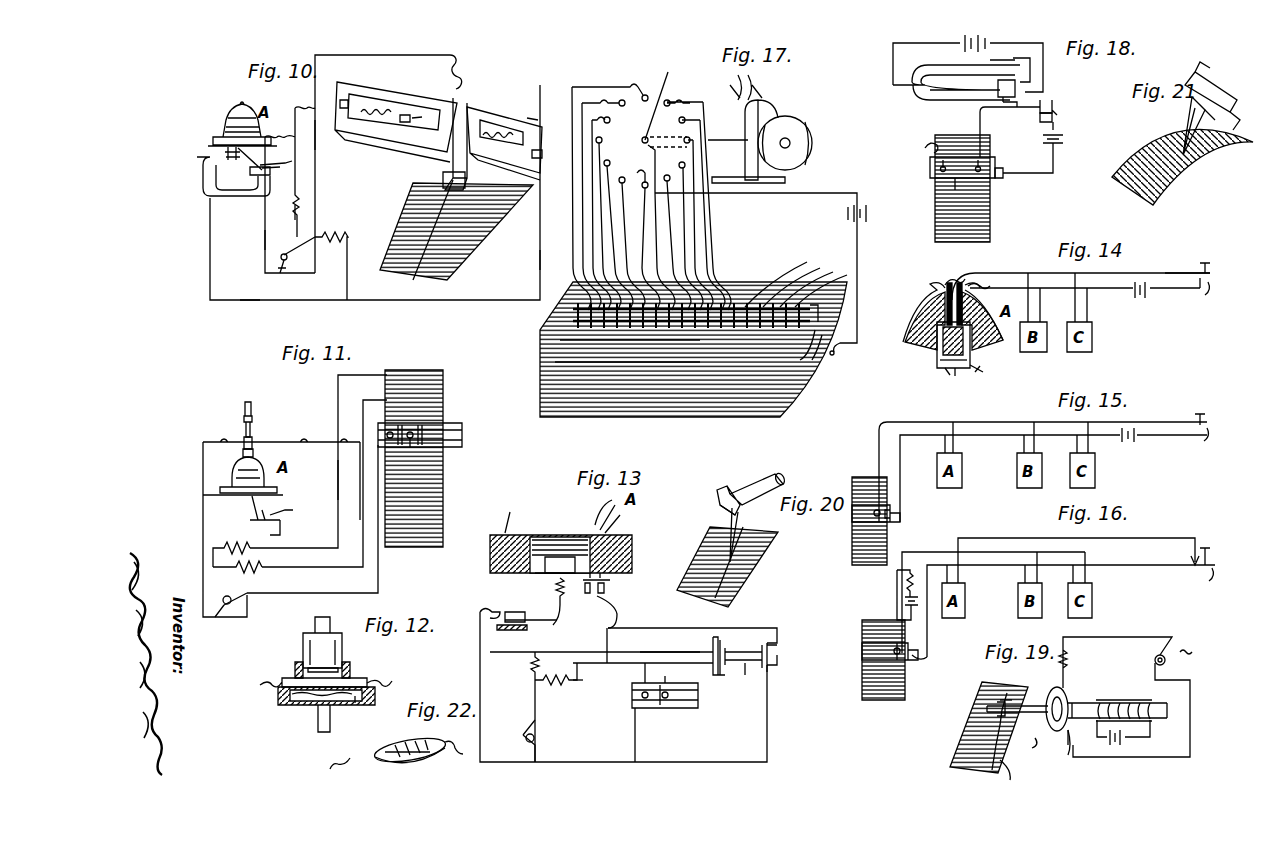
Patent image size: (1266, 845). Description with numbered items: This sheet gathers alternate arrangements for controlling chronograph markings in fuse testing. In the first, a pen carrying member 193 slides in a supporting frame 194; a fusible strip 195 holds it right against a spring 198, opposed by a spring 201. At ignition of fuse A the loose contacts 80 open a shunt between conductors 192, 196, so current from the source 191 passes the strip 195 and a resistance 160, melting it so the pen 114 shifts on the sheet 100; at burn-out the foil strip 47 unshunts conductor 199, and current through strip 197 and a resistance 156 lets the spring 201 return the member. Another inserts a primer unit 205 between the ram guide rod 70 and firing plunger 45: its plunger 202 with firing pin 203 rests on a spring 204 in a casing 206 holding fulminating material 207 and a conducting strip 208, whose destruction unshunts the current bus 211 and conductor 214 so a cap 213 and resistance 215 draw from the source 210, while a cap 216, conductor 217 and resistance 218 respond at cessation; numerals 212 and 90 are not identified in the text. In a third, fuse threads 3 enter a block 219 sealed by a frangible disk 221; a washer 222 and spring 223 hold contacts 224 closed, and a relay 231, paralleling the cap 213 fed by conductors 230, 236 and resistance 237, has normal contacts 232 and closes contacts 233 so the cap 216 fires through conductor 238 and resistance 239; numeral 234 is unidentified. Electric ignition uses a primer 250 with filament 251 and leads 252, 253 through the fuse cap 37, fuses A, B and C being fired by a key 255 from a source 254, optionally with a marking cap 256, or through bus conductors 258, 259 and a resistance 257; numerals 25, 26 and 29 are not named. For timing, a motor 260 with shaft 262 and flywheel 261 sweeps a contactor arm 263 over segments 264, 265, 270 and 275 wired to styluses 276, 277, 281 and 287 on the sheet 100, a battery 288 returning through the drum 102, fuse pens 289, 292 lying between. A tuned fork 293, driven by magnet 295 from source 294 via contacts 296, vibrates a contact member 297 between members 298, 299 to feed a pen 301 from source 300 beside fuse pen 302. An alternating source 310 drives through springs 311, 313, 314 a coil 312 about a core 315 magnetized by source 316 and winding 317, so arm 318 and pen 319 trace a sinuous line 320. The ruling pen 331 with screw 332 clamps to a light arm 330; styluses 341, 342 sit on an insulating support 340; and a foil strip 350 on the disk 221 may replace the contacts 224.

In FIG. 13, the threads 3 is at (560, 535).
In FIG. 14, the screw 25 is at (945, 362).
In FIG. 14, the stylus tip 26 is at (952, 370).
In FIG. 14, the arm 29 is at (975, 372).
In FIG. 14, the fuse cap 37 is at (933, 300).
In FIG. 11, the firing plunger 45 is at (255, 452).
In FIG. 12, the firing plunger 45 is at (318, 722).
In FIG. 10, the foil strip 47 is at (262, 162).
In FIG. 11, the foil strip 47 is at (257, 511).
In FIG. 11, the ram guide rod 70 is at (253, 405).
In FIG. 10, the loose contacts 80 is at (222, 152).
In FIG. 13, the loose contacts 80 is at (612, 584).
In FIG. 10, the contact spring 90 is at (290, 183).
In FIG. 11, the contact spring 90 is at (283, 527).
In FIG. 10, the sheet 100 is at (455, 238).
In FIG. 11, the sheet 100 is at (428, 496).
In FIG. 20, the sheet 100 is at (753, 560).
In FIG. 17, the sheet 100 is at (780, 393).
In FIG. 18, the sheet 100 is at (990, 209).
In FIG. 21, the sheet 100 is at (1185, 170).
In FIG. 15, the sheet 100 is at (852, 540).
In FIG. 16, the sheet 100 is at (862, 678).
In FIG. 19, the sheet 100 is at (952, 740).
In FIG. 17, the drum 102 is at (817, 327).
In FIG. 18, the drum 102 is at (1000, 186).
In FIG. 10, the pen 114 is at (443, 182).
In FIG. 10, the resistance 156 is at (295, 212).
In FIG. 10, the resistance 160 is at (335, 238).
In FIG. 10, the source 191 is at (281, 258).
In FIG. 10, the conductor 192 is at (315, 128).
In FIG. 10, the pen carrying member 193 is at (462, 98).
In FIG. 10, the supporting frame 194 is at (512, 108).
In FIG. 10, the fusible strip 195 is at (540, 150).
In FIG. 10, the conductor 196 is at (245, 300).
In FIG. 10, the strip 197 is at (430, 128).
In FIG. 10, the spring 198 is at (385, 112).
In FIG. 10, the conductor 199 is at (303, 108).
In FIG. 10, the spring 201 is at (528, 114).
In FIG. 12, the plunger 202 is at (310, 634).
In FIG. 12, the firing pin 203 is at (332, 664).
In FIG. 12, the spring 204 is at (350, 668).
In FIG. 11, the primer unit 205 is at (253, 438).
In FIG. 12, the primer unit 205 is at (311, 664).
In FIG. 12, the enclosing casing 206 is at (368, 681).
In FIG. 12, the fulminating material 207 is at (356, 703).
In FIG. 12, the conducting strip 208 is at (300, 691).
In FIG. 11, the source 210 is at (228, 607).
In FIG. 13, the source 210 is at (536, 733).
In FIG. 11, the current bus 211 is at (205, 545).
In FIG. 11, the conductor 212 is at (281, 469).
In FIG. 11, the cap 213 is at (388, 433).
In FIG. 13, the cap 213 is at (640, 705).
In FIG. 11, the conductor 214 is at (370, 401).
In FIG. 11, the resistance 215 is at (246, 569).
In FIG. 11, the cap 216 is at (412, 440).
In FIG. 13, the cap 216 is at (665, 700).
In FIG. 11, the conductor 217 is at (338, 472).
In FIG. 11, the resistance 218 is at (243, 549).
In FIG. 13, the block 219 is at (490, 570).
In FIG. 22, the frangible disk 221 is at (410, 758).
In FIG. 13, the frangible disk 221 is at (530, 575).
In FIG. 13, the washer 222 is at (565, 600).
In FIG. 13, the spring 223 is at (556, 592).
In FIG. 13, the contacts 224 is at (556, 625).
In FIG. 13, the conductor 230 is at (608, 763).
In FIG. 13, the relay 231 is at (745, 672).
In FIG. 13, the normal contacts 232 is at (770, 660).
In FIG. 13, the contacts 233 is at (722, 645).
In FIG. 13, the conductor 234 is at (735, 630).
In FIG. 13, the conductor 236 is at (592, 675).
In FIG. 13, the resistance 237 is at (556, 683).
In FIG. 13, the conductor 238 is at (642, 655).
In FIG. 13, the resistance 239 is at (530, 668).
In FIG. 14, the primer 250 is at (937, 340).
In FIG. 14, the igniting filament 251 is at (937, 355).
In FIG. 14, the lead 252 is at (950, 280).
In FIG. 14, the lead 253 is at (975, 293).
In FIG. 14, the source of current 254 is at (1140, 300).
In FIG. 15, the source of current 254 is at (1130, 444).
In FIG. 16, the source of current 254 is at (912, 605).
In FIG. 14, the key 255 is at (1203, 292).
In FIG. 15, the key 255 is at (1203, 440).
In FIG. 16, the key 255 is at (1205, 580).
In FIG. 15, the record marking cap 256 is at (890, 508).
In FIG. 16, the record marking cap 256 is at (910, 660).
In FIG. 16, the resistance 257 is at (912, 565).
In FIG. 16, the bus conductor 258 is at (1012, 545).
In FIG. 16, the bus conductor 259 is at (1007, 568).
In FIG. 17, the constant speed motor 260 is at (762, 112).
In FIG. 17, the flywheel 261 is at (803, 128).
In FIG. 17, the shaft 262 is at (722, 118).
In FIG. 17, the contactor arm 263 is at (672, 71).
In FIG. 17, the segment 264 is at (647, 92).
In FIG. 17, the segment 265 is at (636, 205).
In FIG. 17, the segment 270 is at (632, 171).
In FIG. 17, the segment 275 is at (685, 88).
In FIG. 17, the stylus member 276 is at (573, 309).
In FIG. 17, the stylus member 277 is at (575, 320).
In FIG. 17, the pen 281 is at (614, 340).
In FIG. 17, the pen 287 is at (612, 358).
In FIG. 17, the battery 288 is at (845, 213).
In FIG. 17, the pen 289 is at (740, 282).
In FIG. 17, the pen 292 is at (808, 360).
In FIG. 18, the tuned fork 293 is at (920, 102).
In FIG. 18, the source 294 is at (985, 40).
In FIG. 18, the magnet 295 is at (997, 88).
In FIG. 18, the contacts 296 is at (1010, 62).
In FIG. 18, the contact member 297 is at (1012, 110).
In FIG. 18, the member 298 is at (1055, 106).
In FIG. 18, the member 299 is at (1065, 113).
In FIG. 18, the source 300 is at (1064, 138).
In FIG. 18, the pen 301 is at (978, 178).
In FIG. 18, the pen 302 is at (930, 178).
In FIG. 19, the alternating current source 310 is at (1168, 664).
In FIG. 19, the spring 311 is at (1066, 758).
In FIG. 19, the solenoidal coil 312 is at (1066, 692).
In FIG. 19, the spring 313 is at (1066, 668).
In FIG. 19, the third spring 314 is at (1037, 748).
In FIG. 19, the core 315 is at (1155, 703).
In FIG. 19, the source 316 is at (1123, 740).
In FIG. 19, the winding 317 is at (1122, 703).
In FIG. 19, the pen carrying arm 318 is at (1035, 714).
In FIG. 19, the pen 319 is at (968, 696).
In FIG. 19, the sinuous line 320 is at (1016, 773).
In FIG. 20, the arm 330 is at (778, 474).
In FIG. 20, the ruling pen 331 is at (740, 514).
In FIG. 20, the screw 332 is at (720, 515).
In FIG. 21, the insulating support 340 is at (1218, 92).
In FIG. 21, the stylus 341 is at (1222, 150).
In FIG. 21, the stylus 342 is at (1185, 110).
In FIG. 22, the metal foil strip 350 is at (435, 742).